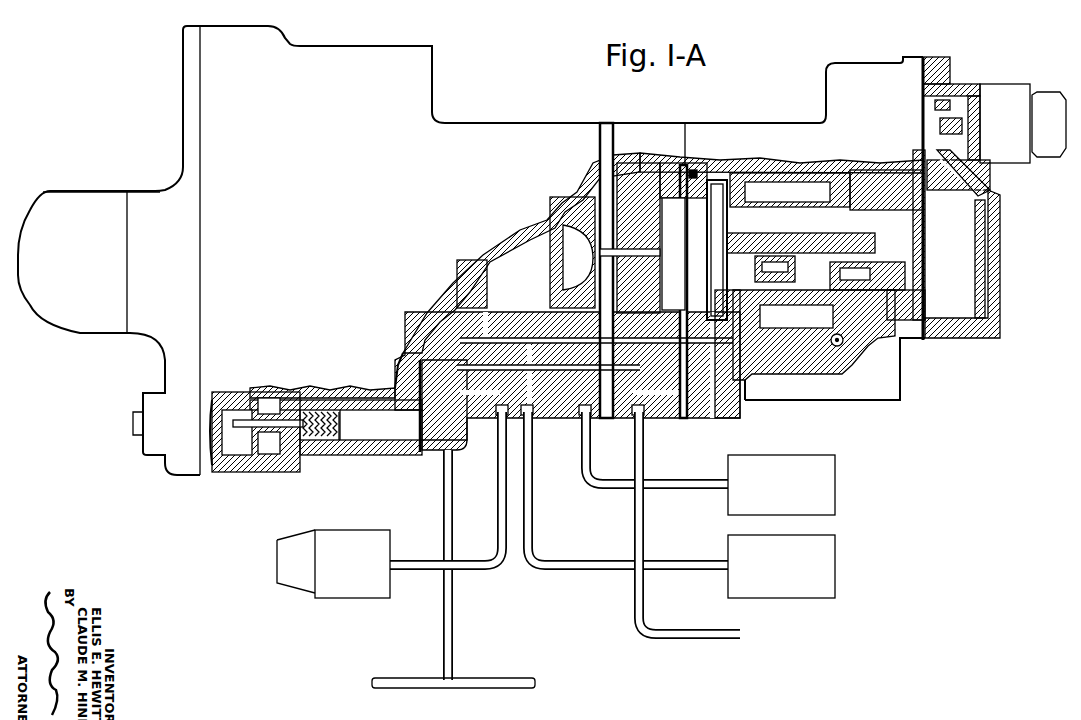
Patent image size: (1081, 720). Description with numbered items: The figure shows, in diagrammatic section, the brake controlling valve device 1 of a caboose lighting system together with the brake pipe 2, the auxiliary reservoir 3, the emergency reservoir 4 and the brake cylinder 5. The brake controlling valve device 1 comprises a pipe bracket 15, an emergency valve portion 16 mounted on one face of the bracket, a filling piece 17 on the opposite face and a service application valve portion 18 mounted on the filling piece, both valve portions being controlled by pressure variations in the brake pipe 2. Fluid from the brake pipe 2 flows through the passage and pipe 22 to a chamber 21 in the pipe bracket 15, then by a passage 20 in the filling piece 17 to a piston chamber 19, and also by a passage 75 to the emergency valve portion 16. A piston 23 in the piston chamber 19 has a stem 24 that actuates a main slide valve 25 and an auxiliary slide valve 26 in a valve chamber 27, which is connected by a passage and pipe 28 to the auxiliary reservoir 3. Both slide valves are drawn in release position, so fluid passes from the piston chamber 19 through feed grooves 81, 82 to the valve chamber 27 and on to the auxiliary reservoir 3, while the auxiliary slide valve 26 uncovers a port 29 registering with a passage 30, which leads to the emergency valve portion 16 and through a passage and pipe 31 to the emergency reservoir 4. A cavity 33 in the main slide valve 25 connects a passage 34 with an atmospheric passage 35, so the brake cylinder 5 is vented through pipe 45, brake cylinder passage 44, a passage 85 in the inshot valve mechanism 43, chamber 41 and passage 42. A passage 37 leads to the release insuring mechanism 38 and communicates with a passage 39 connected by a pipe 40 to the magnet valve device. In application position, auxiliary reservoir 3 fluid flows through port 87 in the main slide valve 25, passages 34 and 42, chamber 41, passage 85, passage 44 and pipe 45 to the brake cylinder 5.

The brake controlling valve device 1 is at (445, 121).
The emergency valve portion 16 is at (183, 475).
The brake cylinder passage 44 is at (322, 390).
The inshot valve mechanism 43 is at (256, 458).
The passage 85 is at (268, 440).
The chamber 41 is at (385, 447).
The passage 42 is at (431, 452).
The passage and pipe 22 is at (452, 458).
The brake pipe 2 is at (428, 686).
The pipe 45 is at (497, 535).
The brake cylinder 5 is at (295, 588).
The passage and pipe 31 is at (526, 416).
The pipe bracket 15 is at (558, 414).
The passage and pipe 28 is at (591, 420).
The pipe 40 is at (645, 456).
The filling piece 17 is at (648, 412).
The feed groove 82 is at (718, 356).
The auxiliary reservoir 3 is at (822, 493).
The emergency reservoir 4 is at (822, 574).
The chamber 21 is at (529, 244).
The passage 75 is at (488, 262).
The piston chamber 19 is at (697, 200).
The feed groove 81 is at (722, 205).
The piston 23 is at (762, 167).
The passage 39 is at (806, 163).
The valve chamber 27 is at (868, 215).
The release insuring mechanism 38 is at (960, 90).
The stem 24 is at (752, 236).
The auxiliary slide valve 26 is at (792, 254).
The passage 20 is at (656, 258).
The port 29 is at (712, 282).
The passage 30 is at (702, 320).
The cavity 33 is at (868, 270).
The port 87 is at (895, 268).
The main slide valve 25 is at (772, 318).
The passage 35 is at (807, 318).
The passage 34 is at (855, 343).
The passage 37 is at (915, 332).
The service application valve portion 18 is at (902, 378).